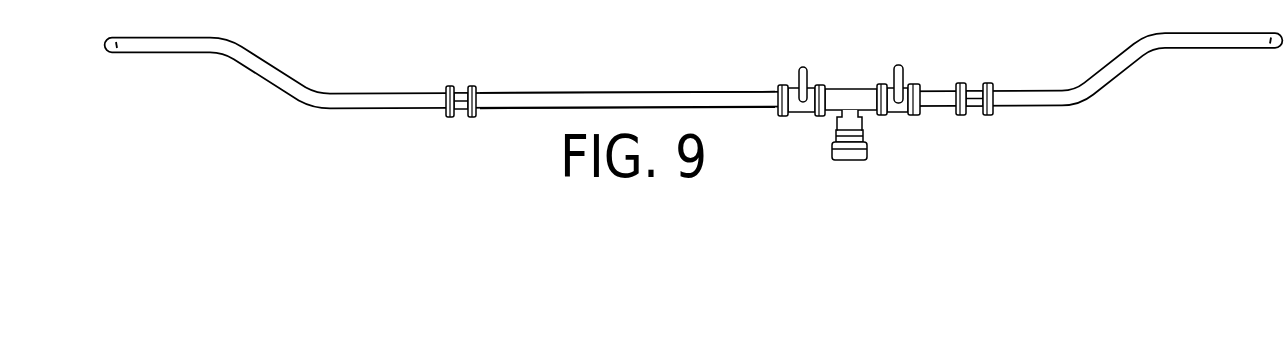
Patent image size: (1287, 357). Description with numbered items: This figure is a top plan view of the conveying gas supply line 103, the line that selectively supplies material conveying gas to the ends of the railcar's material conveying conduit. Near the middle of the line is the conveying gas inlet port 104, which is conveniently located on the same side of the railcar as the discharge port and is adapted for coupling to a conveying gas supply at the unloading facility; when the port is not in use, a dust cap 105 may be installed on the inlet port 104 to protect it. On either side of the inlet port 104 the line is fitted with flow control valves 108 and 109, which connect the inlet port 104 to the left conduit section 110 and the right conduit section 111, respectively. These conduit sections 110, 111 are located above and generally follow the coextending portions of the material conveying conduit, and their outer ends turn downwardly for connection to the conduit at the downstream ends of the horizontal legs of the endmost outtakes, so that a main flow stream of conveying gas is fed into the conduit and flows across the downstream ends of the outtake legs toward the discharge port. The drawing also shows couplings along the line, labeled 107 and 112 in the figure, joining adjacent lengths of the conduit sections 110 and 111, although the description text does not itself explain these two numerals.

The conveying gas supply line 103 is at (341, 116).
The conveying gas inlet port 104 is at (864, 139).
The dust cap 105 is at (851, 161).
The coupling 107 is at (461, 101).
The flow control valve 108 is at (789, 85).
The flow control valve 109 is at (909, 84).
The left conduit section 110 is at (567, 91).
The right conduit section 111 is at (1123, 77).
The coupling 112 is at (974, 99).